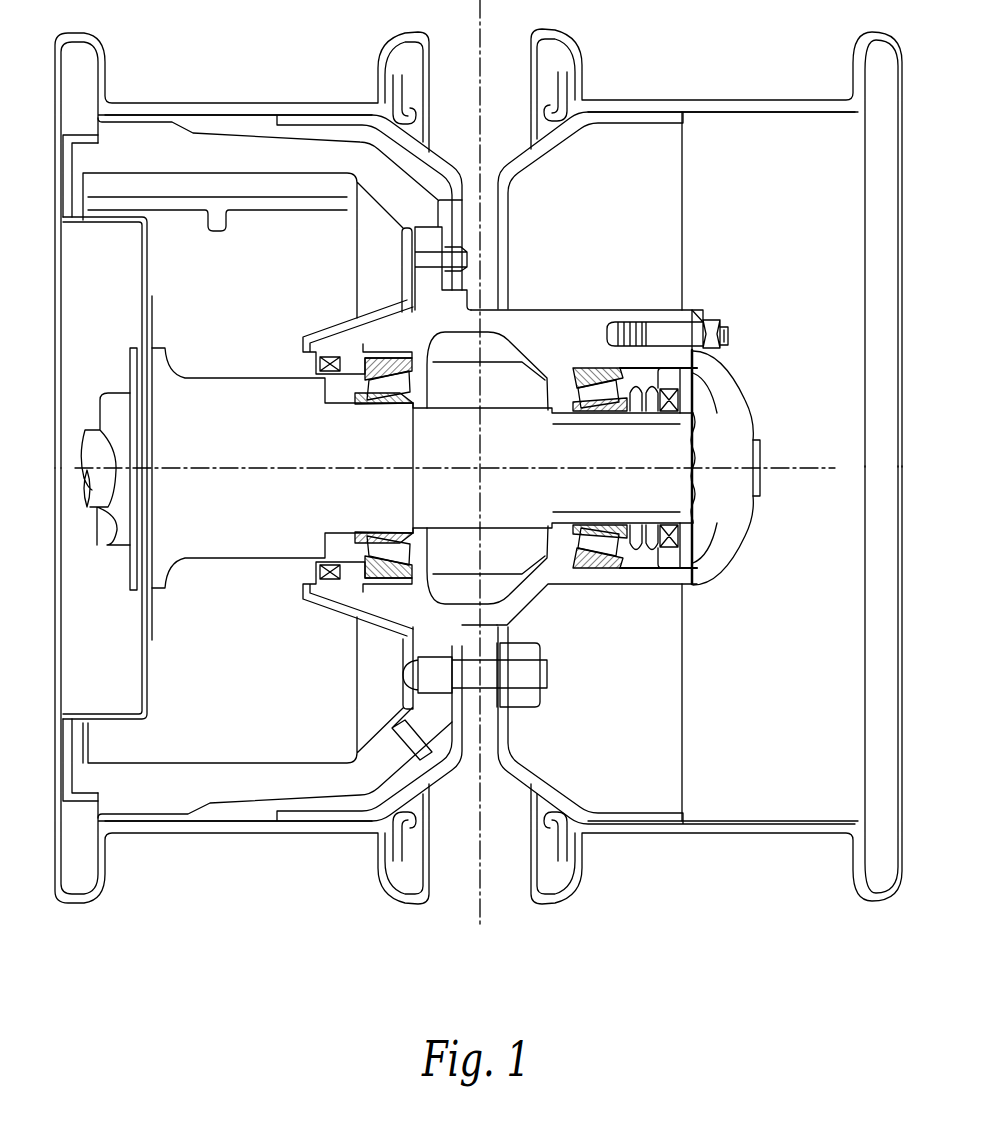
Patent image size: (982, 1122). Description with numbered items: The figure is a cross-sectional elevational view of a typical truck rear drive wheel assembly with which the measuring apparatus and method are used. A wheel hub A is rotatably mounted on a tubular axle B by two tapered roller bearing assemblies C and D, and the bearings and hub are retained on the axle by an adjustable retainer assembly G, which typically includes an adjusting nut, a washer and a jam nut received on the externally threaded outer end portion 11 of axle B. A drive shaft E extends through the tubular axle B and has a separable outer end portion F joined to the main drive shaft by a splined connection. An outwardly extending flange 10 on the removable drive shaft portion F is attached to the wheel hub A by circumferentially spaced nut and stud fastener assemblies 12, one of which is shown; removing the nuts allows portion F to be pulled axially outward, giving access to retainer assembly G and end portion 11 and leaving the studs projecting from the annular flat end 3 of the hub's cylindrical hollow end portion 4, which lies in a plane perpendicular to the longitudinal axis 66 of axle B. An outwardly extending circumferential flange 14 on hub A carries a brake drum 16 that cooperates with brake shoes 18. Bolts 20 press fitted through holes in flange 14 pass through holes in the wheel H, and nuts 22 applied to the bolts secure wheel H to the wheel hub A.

The wheel H is at (640, 96).
The brake drum 16 is at (303, 153).
The circumferential flange 14 is at (428, 238).
The brake shoes 18 is at (243, 190).
The tapered roller bearing assembly C is at (386, 345).
The drive shaft E is at (90, 428).
The wheel hub A is at (527, 305).
The tubular axle B is at (508, 536).
The tapered roller bearing assembly D is at (585, 365).
The externally threaded outer end portion 11 is at (636, 420).
The adjustable retainer assembly G is at (646, 557).
The cylindrical hollow end portion 4 is at (668, 316).
The annular flat end 3 is at (706, 318).
The nut and stud threaded fastener assembly 12 is at (722, 320).
The outwardly extending flange 10 is at (737, 547).
The separable outer end portion F is at (768, 428).
The longitudinal axis 66 is at (797, 465).
The bolt 20 is at (432, 678).
The nut 22 is at (528, 704).